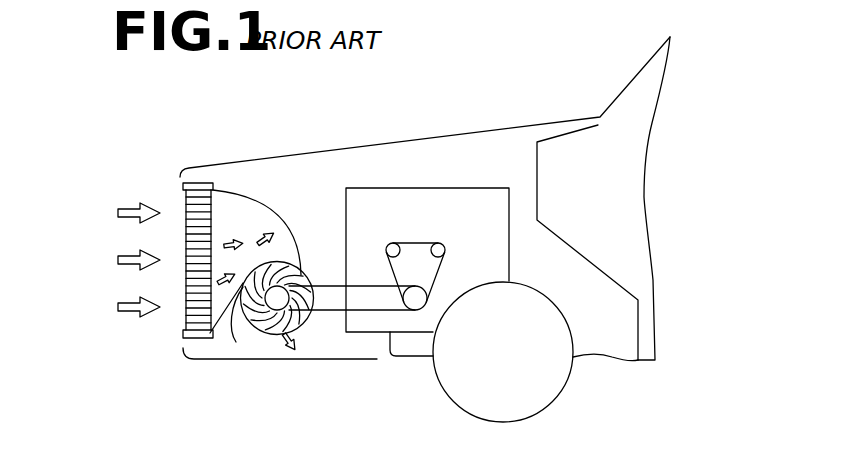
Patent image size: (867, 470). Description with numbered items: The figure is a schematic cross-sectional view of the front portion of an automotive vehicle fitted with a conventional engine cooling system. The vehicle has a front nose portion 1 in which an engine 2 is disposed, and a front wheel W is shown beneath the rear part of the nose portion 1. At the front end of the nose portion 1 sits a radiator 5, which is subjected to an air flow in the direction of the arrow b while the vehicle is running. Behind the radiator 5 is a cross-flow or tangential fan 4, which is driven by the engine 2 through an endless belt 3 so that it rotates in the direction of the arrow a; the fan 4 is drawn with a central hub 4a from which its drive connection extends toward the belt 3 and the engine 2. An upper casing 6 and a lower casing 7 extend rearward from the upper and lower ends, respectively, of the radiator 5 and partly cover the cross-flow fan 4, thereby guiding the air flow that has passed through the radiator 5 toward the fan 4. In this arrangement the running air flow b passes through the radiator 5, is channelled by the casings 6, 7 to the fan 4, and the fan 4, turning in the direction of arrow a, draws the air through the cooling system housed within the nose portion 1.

The front nose portion 1 is at (483, 122).
The engine 2 is at (418, 202).
The endless belt 3 is at (377, 313).
The cross-flow fan 4 is at (256, 327).
The fan hub 4a is at (281, 302).
The radiator 5 is at (185, 236).
The upper casing 6 is at (268, 213).
The lower casing 7 is at (236, 342).
The arrow indicating fan rotation direction a is at (253, 331).
The arrow indicating air flow direction b is at (132, 208).
The front wheel W is at (552, 380).